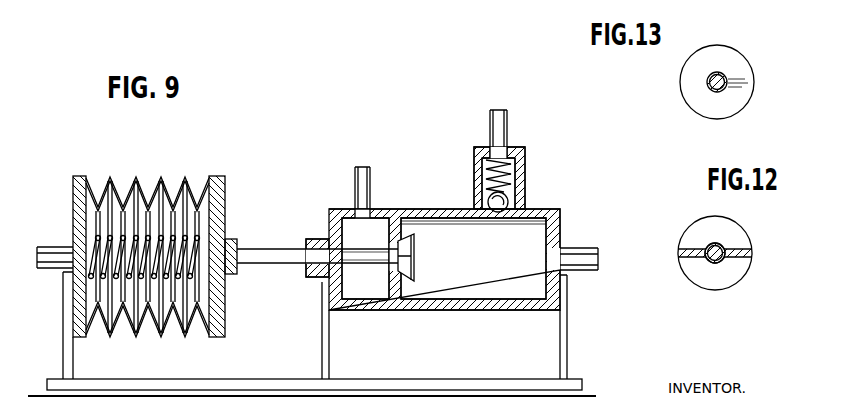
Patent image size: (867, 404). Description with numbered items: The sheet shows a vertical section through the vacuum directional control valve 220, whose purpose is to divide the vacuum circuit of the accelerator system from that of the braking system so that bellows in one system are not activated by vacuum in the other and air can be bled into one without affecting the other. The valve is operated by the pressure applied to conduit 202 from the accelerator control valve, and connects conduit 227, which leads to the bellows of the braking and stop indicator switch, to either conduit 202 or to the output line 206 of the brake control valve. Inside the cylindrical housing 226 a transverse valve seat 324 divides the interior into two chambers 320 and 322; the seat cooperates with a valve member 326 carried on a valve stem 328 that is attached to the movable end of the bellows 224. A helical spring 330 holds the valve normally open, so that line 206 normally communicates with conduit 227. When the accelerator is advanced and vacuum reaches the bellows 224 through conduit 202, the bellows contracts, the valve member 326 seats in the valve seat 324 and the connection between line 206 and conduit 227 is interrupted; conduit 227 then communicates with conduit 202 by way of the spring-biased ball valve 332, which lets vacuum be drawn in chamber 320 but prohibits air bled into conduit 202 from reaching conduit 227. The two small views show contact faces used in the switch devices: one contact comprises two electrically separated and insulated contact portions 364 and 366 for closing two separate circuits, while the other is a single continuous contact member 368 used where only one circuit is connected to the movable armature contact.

In FIG. 9, the conduit 202 is at (62, 246).
In FIG. 9, the output line of the brake control valve 206 is at (355, 194).
In FIG. 9, the vacuum directional control valve 220 is at (283, 347).
In FIG. 9, the bellows 224 is at (110, 177).
In FIG. 9, the housing 226 is at (562, 220).
In FIG. 9, the conduit 227 is at (583, 270).
In FIG. 9, the chamber 320 is at (502, 285).
In FIG. 9, the chamber 322 is at (379, 290).
In FIG. 9, the transverse valve seat 324 is at (400, 229).
In FIG. 9, the valve member 326 is at (410, 251).
In FIG. 9, the valve stem 328 is at (350, 256).
In FIG. 9, the helical spring 330 is at (173, 248).
In FIG. 9, the spring-biased ball valve 332 is at (508, 199).
In FIG. 12, the contact portion 364 is at (732, 238).
In FIG. 12, the contact portion 366 is at (735, 268).
In FIG. 13, the continuous contact member 368 is at (690, 92).